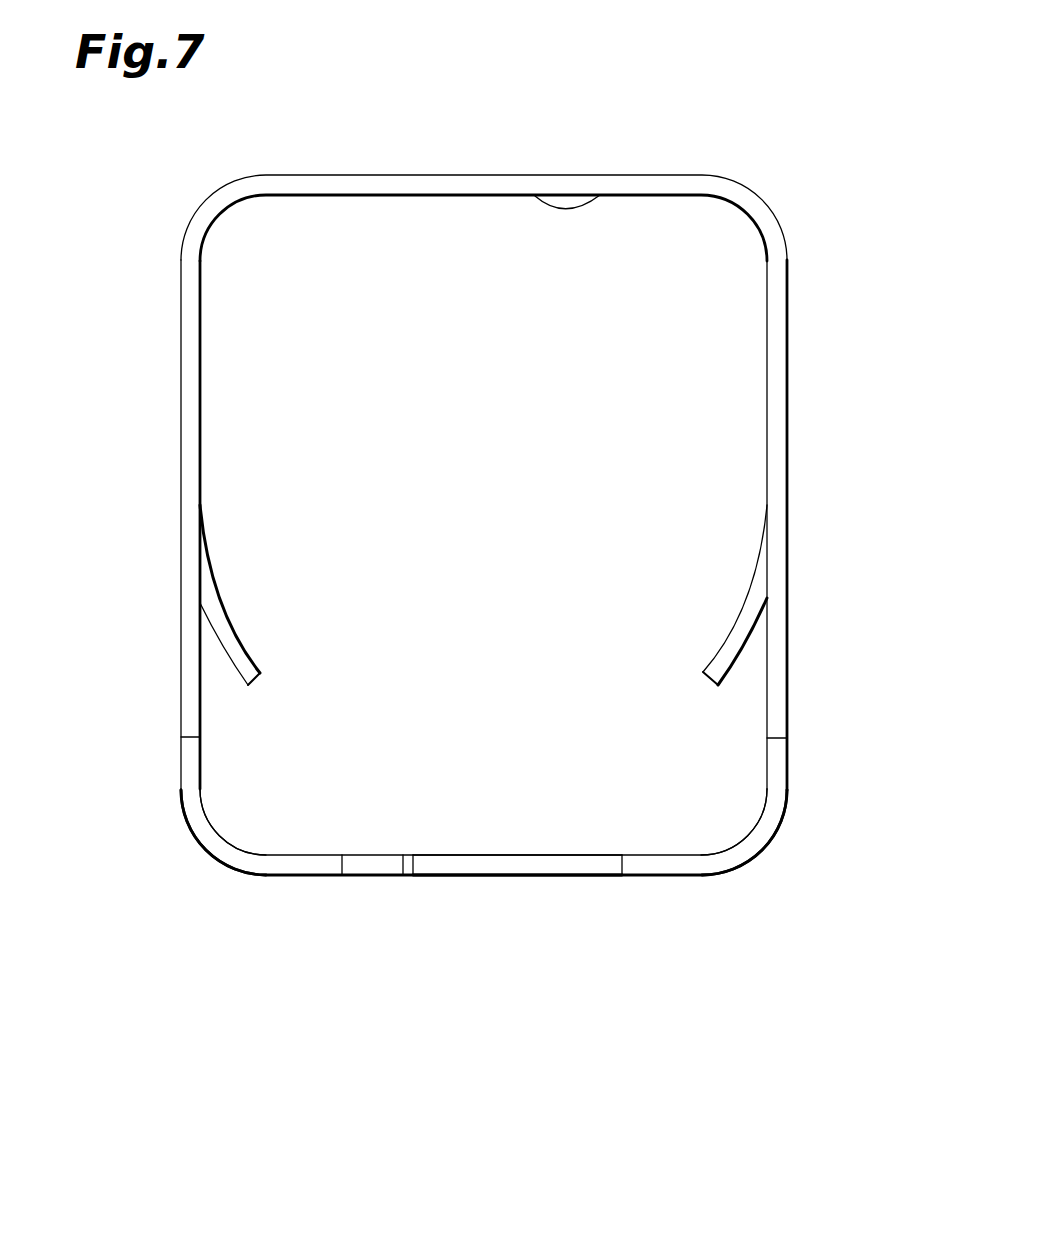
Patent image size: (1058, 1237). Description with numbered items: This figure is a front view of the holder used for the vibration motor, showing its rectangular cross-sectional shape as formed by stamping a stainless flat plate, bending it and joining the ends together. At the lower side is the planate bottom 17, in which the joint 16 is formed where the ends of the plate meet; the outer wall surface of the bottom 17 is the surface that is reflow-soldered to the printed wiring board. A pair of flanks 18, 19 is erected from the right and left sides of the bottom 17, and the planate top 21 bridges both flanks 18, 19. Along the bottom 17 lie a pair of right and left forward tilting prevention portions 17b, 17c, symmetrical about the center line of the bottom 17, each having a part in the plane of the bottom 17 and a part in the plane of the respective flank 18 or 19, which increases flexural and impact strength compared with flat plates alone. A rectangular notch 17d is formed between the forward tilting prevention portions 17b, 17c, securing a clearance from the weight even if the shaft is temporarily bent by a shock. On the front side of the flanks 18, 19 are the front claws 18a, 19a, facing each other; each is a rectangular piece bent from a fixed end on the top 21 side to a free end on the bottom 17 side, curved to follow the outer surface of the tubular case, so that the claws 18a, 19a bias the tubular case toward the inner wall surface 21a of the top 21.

The joint 16 is at (414, 850).
The bottom 17 is at (285, 880).
The forward tilting prevention portion 17b is at (207, 848).
The forward tilting prevention portion 17c is at (768, 840).
The notch 17d is at (598, 882).
The flank 18 is at (180, 352).
The front claw 18a is at (237, 647).
The flank 19 is at (790, 355).
The front claw 19a is at (725, 658).
The top 21 is at (494, 176).
The inner wall surface 21a is at (600, 195).